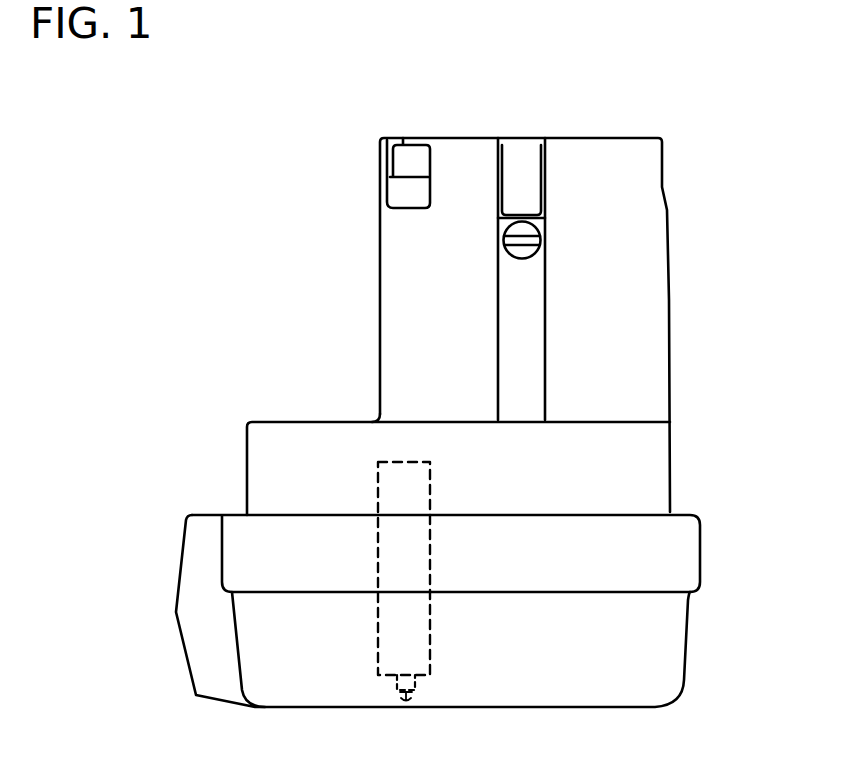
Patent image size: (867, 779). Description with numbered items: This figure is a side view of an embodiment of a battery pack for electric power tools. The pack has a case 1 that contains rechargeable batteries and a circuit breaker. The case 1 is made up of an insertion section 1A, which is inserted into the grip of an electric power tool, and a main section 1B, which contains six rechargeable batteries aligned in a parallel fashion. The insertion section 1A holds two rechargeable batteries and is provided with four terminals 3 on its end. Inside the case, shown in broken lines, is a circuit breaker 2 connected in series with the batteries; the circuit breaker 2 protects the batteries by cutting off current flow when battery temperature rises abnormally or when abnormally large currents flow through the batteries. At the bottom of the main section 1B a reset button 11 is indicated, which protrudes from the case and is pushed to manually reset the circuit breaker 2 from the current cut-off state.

The case 1 is at (650, 470).
The insertion section 1A is at (680, 278).
The main section 1B is at (705, 591).
The circuit breaker 2 is at (387, 473).
The terminal 3 is at (416, 153).
The reset button 11 is at (397, 692).